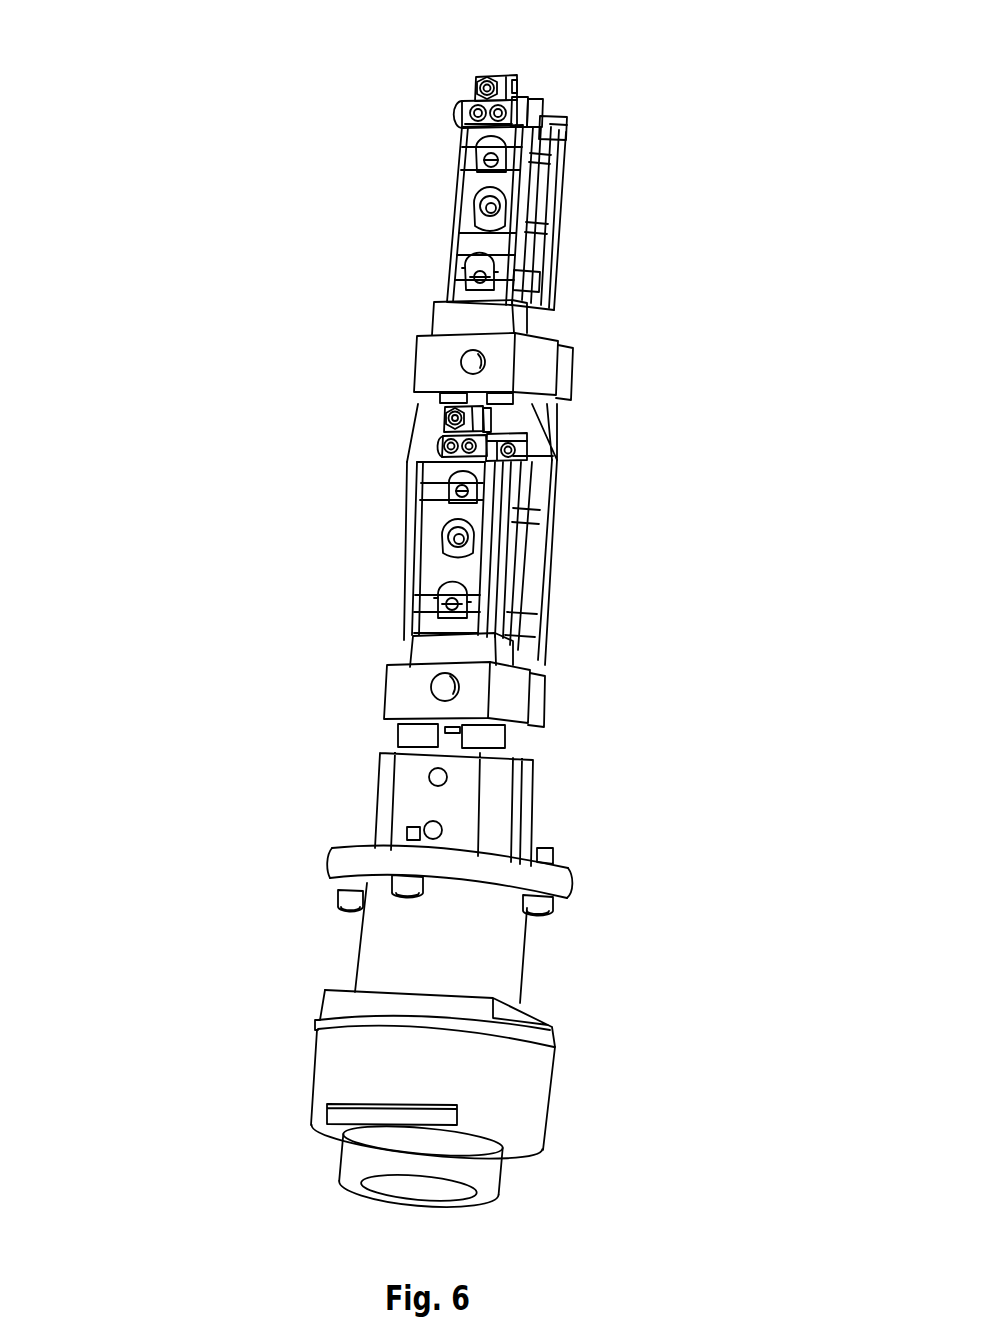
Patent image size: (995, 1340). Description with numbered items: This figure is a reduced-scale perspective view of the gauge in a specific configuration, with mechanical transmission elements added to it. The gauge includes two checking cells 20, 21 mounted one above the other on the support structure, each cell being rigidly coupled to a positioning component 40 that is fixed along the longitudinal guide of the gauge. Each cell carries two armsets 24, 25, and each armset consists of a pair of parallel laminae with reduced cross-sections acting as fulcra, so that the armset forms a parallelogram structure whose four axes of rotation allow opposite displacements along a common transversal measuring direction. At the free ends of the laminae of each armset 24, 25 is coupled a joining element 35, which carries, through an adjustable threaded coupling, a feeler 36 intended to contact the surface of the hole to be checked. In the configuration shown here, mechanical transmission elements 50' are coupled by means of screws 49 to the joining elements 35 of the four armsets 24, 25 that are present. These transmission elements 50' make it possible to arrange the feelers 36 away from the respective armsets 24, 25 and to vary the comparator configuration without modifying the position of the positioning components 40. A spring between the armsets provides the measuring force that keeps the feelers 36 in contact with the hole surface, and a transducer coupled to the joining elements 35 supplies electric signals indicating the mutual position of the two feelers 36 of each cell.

The cell 20 is at (403, 210).
The cell 21 is at (352, 547).
The armset 24 is at (438, 237).
The armset 25 is at (577, 233).
The joining element 35 is at (536, 127).
The feeler 36 is at (491, 80).
The positioning component 40 is at (437, 352).
The screw 49 is at (476, 113).
The mechanical transmission element 50' is at (593, 239).